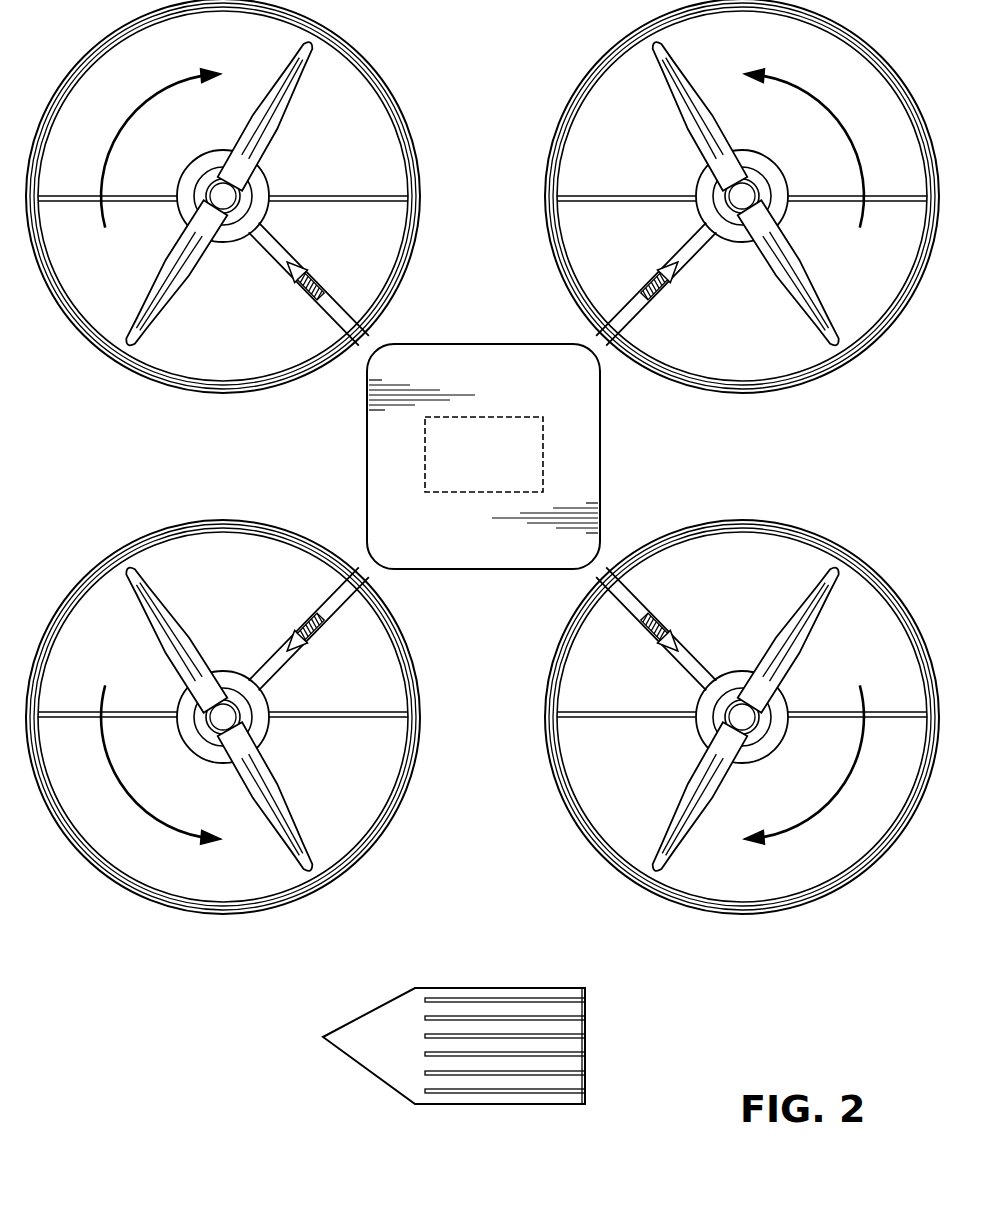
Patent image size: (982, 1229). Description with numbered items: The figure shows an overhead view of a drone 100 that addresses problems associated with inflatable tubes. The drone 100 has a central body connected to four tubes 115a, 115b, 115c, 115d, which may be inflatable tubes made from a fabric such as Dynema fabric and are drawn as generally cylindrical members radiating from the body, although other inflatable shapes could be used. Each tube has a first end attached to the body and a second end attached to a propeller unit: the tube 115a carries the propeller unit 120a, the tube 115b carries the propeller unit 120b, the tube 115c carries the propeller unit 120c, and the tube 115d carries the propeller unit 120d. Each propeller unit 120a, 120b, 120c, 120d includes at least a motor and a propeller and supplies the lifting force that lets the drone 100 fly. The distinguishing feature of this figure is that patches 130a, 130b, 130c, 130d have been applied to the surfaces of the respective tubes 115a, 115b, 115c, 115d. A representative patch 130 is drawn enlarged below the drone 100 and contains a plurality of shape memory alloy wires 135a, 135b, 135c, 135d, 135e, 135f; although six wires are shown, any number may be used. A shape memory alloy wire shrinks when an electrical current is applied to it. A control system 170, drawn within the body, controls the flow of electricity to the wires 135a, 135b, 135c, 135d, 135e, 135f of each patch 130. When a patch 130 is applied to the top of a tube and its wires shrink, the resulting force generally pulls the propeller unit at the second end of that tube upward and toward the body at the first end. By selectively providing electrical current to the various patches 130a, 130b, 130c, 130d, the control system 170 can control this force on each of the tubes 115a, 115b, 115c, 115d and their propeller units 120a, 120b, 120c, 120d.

The drone 100 is at (503, 900).
The tube 115a is at (638, 314).
The tube 115b is at (638, 599).
The tube 115c is at (327, 599).
The tube 115d is at (327, 314).
The propeller unit 120a is at (697, 187).
The propeller unit 120b is at (697, 726).
The propeller unit 120c is at (268, 726).
The propeller unit 120d is at (268, 187).
The patch 130a is at (647, 268).
The patch 130b is at (647, 645).
The patch 130c is at (318, 645).
The patch 130d is at (318, 268).
The patch 130 is at (373, 1008).
The shape memory alloy wire 135a is at (584, 994).
The shape memory alloy wire 135b is at (557, 1015).
The shape memory alloy wire 135c is at (541, 1033).
The shape memory alloy wire 135d is at (560, 1053).
The shape memory alloy wire 135e is at (538, 1069).
The shape memory alloy wire 135f is at (559, 1084).
The control system 170 is at (425, 455).